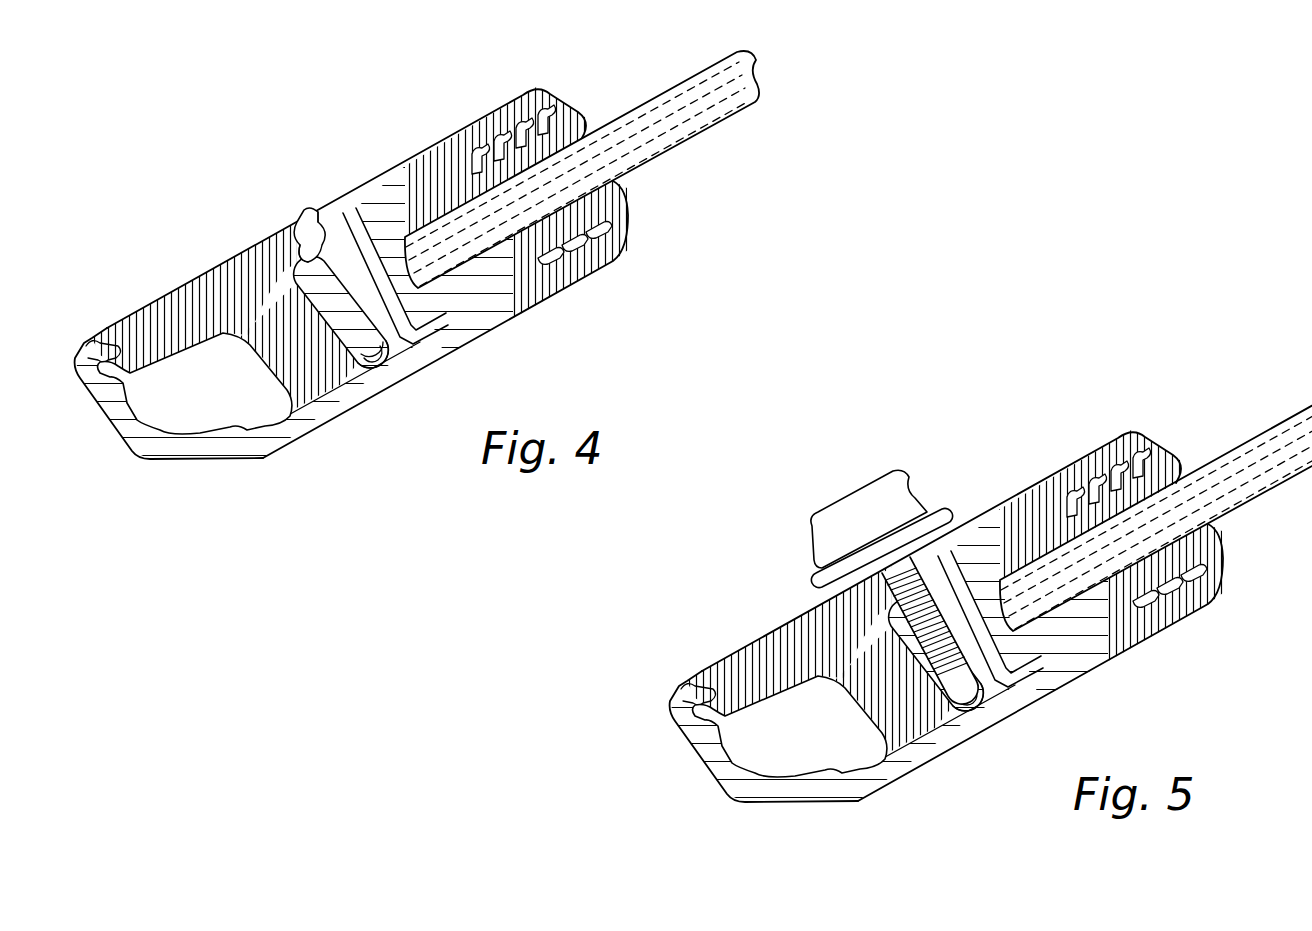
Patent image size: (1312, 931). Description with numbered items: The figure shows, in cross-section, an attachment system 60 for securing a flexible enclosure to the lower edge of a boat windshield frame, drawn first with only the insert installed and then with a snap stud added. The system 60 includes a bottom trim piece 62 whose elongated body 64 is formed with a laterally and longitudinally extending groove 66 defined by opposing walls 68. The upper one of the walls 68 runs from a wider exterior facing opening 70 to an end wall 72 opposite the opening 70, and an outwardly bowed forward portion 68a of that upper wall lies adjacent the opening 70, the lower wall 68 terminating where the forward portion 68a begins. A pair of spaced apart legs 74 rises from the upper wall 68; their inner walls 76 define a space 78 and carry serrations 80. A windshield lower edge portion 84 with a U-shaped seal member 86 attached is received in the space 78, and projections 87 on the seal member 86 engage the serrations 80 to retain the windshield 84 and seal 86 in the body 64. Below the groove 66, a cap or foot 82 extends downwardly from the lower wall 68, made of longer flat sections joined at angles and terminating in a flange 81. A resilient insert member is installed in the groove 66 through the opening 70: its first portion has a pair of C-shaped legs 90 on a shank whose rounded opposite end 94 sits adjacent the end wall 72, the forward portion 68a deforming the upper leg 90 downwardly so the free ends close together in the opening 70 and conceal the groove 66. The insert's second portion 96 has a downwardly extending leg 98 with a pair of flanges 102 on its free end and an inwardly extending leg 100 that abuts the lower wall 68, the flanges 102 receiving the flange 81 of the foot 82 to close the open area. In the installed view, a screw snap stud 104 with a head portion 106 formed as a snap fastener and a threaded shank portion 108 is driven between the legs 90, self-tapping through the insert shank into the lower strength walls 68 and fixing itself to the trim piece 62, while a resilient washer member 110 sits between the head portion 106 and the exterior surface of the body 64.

In FIG. 5, the system 60 is at (1100, 398).
In FIG. 4, the bottom trim piece 62 is at (213, 470).
In FIG. 5, the bottom trim piece 62 is at (808, 813).
In FIG. 4, the elongated body 64 is at (280, 446).
In FIG. 5, the elongated body 64 is at (1040, 662).
In FIG. 4, the groove 66 is at (375, 372).
In FIG. 5, the groove 66 is at (970, 715).
In FIG. 4, the walls 68 is at (368, 378).
In FIG. 5, the walls 68 is at (985, 693).
In FIG. 4, the forward portion 68a is at (335, 196).
In FIG. 4, the opening 70 is at (323, 192).
In FIG. 4, the end wall 72 is at (382, 365).
In FIG. 5, the end wall 72 is at (977, 708).
In FIG. 4, the legs 74 is at (412, 172).
In FIG. 5, the legs 74 is at (1138, 631).
In FIG. 4, the inner walls 76 is at (393, 206).
In FIG. 5, the inner walls 76 is at (1035, 663).
In FIG. 4, the space 78 is at (541, 116).
In FIG. 5, the space 78 is at (1137, 461).
In FIG. 4, the serrations 80 is at (505, 130).
In FIG. 4, the flange 81 is at (85, 335).
In FIG. 4, the cap or foot 82 is at (110, 423).
In FIG. 5, the cap or foot 82 is at (705, 766).
In FIG. 4, the windshield lower edge portion 84 is at (728, 68).
In FIG. 5, the windshield lower edge portion 84 is at (1306, 405).
In FIG. 4, the U-shaped seal member 86 is at (625, 218).
In FIG. 4, the projections 87 is at (568, 268).
In FIG. 5, the projections 87 is at (1163, 611).
In FIG. 4, the legs 90 is at (318, 210).
In FIG. 5, the opposite end 94 is at (955, 722).
In FIG. 5, the second portion 96 is at (760, 626).
In FIG. 4, the downwardly extending leg 98 is at (180, 290).
In FIG. 4, the inwardly extending leg 100 is at (330, 405).
In FIG. 4, the flanges 102 is at (125, 318).
In FIG. 5, the screw snap stud 104 is at (887, 552).
In FIG. 5, the head portion 106 is at (900, 478).
In FIG. 5, the threaded shank portion 108 is at (884, 763).
In FIG. 5, the washer member 110 is at (958, 540).